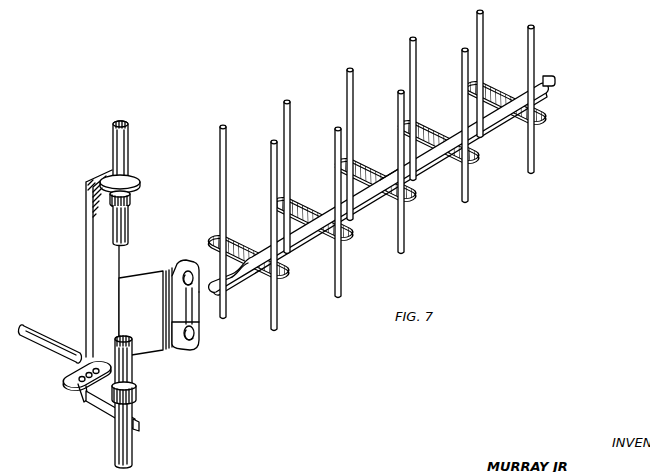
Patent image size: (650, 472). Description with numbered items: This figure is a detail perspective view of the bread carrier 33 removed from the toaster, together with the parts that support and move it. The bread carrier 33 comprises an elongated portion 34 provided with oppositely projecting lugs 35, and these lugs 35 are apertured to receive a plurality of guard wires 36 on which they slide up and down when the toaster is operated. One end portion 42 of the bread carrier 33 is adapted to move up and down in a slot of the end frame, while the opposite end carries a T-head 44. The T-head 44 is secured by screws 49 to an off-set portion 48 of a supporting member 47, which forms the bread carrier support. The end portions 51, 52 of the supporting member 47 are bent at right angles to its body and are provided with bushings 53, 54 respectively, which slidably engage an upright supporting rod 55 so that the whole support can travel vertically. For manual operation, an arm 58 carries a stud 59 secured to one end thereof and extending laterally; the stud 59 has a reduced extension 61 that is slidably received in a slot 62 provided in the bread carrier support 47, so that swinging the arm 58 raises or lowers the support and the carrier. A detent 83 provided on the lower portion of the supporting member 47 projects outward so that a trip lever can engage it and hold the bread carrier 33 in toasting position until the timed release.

The bread carrier 33 is at (373, 250).
The elongated portion 34 is at (388, 168).
The lugs 35 is at (423, 122).
The guard wires 36 is at (348, 90).
The end portion 42 is at (556, 81).
The T-head 44 is at (190, 310).
The supporting member 47 is at (107, 266).
The off-set portion 48 is at (150, 338).
The screws 49 is at (191, 271).
The end portion 51 is at (134, 179).
The end portion 52 is at (137, 396).
The bushing 53 is at (131, 198).
The bushing 54 is at (115, 405).
The upright supporting rod 55 is at (113, 140).
The arm 58 is at (43, 310).
The stud 59 is at (55, 350).
The reduced extension 61 is at (89, 389).
The slot 62 is at (82, 392).
The detent 83 is at (137, 432).